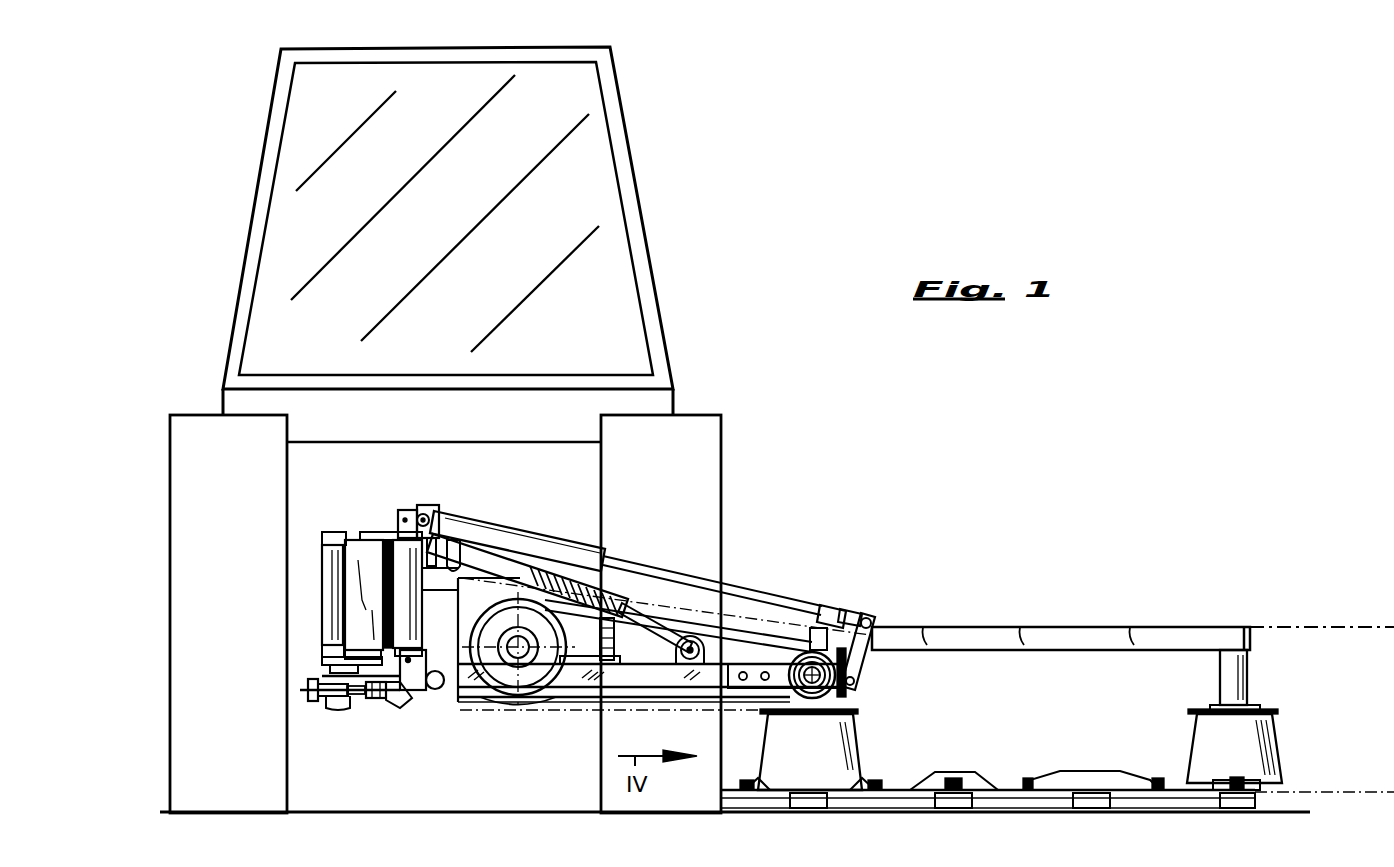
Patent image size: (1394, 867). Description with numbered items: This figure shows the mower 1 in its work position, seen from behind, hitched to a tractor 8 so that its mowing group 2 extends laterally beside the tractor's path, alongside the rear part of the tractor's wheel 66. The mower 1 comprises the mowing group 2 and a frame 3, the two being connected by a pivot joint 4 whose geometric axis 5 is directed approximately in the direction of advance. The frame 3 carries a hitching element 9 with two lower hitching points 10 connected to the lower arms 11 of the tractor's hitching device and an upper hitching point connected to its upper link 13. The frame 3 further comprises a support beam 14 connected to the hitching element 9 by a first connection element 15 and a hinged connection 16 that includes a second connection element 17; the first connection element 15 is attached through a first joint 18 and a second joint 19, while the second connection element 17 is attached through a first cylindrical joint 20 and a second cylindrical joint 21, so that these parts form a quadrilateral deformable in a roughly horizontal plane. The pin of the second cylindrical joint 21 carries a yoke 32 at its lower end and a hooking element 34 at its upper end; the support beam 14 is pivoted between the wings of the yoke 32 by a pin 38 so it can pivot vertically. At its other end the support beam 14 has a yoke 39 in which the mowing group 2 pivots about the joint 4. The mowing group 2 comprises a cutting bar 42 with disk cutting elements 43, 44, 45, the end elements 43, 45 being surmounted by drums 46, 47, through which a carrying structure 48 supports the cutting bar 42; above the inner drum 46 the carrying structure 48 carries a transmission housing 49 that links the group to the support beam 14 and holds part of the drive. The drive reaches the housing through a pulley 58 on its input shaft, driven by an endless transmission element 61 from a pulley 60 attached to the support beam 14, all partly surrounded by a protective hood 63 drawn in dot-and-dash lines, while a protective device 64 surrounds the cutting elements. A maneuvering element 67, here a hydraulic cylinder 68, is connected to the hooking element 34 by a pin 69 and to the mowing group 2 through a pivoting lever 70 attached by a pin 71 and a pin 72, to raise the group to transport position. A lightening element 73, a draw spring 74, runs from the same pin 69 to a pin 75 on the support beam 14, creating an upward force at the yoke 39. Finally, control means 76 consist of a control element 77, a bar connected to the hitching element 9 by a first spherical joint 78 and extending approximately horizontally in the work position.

The mower 1 is at (968, 528).
The mowing group 2 is at (1016, 706).
The frame 3 is at (470, 705).
The pivot joint 4 is at (852, 696).
The geometric axis 5 is at (820, 700).
The tractor 8 is at (634, 219).
The hitching element 9 is at (443, 585).
The lower hitching points 10 is at (307, 690).
The lower arms 11 is at (313, 701).
The upper link 13 is at (433, 532).
The support beam 14 is at (625, 693).
The first connection element 15 is at (667, 690).
The hinged connection 16 is at (312, 580).
The second connection element 17 is at (380, 547).
The first joint 18 is at (592, 625).
The second joint 19 is at (720, 652).
The first cylindrical joint 20 is at (330, 532).
The second cylindrical joint 21 is at (406, 509).
The yoke 32 is at (425, 664).
The hooking element 34 is at (400, 512).
The pin 38 is at (437, 690).
The yoke 39 is at (755, 690).
The cutting bar 42 is at (1000, 780).
The cutting element 43 is at (757, 782).
The cutting element 44 is at (930, 778).
The cutting element 45 is at (1265, 782).
The drum 46 is at (855, 768).
The drum 47 is at (1198, 726).
The carrying structure 48 is at (1093, 627).
The transmission housing 49 is at (770, 647).
The pulley 58 is at (805, 700).
The pulley 60 is at (508, 690).
The endless transmission element 61 is at (583, 693).
The protective hood 63 is at (533, 712).
The protective device 64 is at (1320, 624).
The wheel 66 is at (712, 474).
The maneuvering element 67 is at (506, 518).
The hydraulic cylinder 68 is at (540, 537).
The pin 69 is at (424, 514).
The pivoting lever 70 is at (867, 662).
The pin 71 is at (858, 686).
The pin 72 is at (870, 620).
The lightening element 73 is at (615, 590).
The draw spring 74 is at (622, 608).
The pin 75 is at (693, 662).
The control means 76 is at (375, 700).
The control element 77 is at (408, 694).
The first spherical joint 78 is at (332, 676).